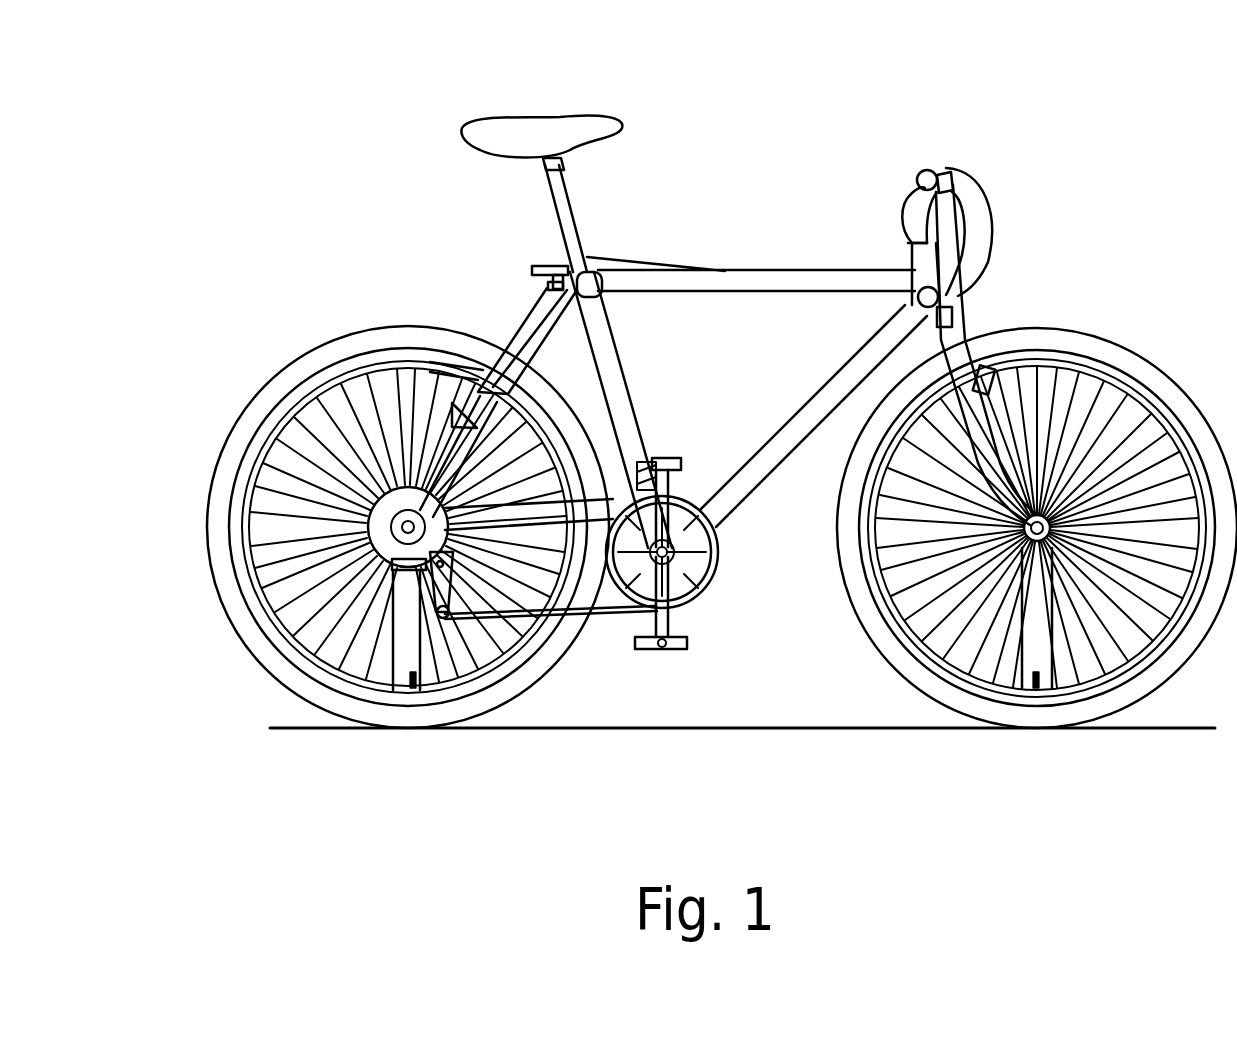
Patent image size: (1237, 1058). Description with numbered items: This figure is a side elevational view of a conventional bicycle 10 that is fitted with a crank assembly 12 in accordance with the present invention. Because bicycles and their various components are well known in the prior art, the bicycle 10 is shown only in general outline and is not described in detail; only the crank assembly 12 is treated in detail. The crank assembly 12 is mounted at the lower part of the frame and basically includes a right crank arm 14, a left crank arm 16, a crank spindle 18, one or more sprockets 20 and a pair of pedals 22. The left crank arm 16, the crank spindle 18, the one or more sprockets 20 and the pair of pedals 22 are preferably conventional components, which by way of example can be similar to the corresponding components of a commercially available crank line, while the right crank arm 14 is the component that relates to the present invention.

The bicycle 10 is at (985, 128).
The crank assembly 12 is at (742, 627).
The right crank arm 14 is at (674, 622).
The left crank arm 16 is at (665, 490).
The crank spindle 18 is at (633, 603).
The sprockets 20 is at (717, 578).
The pedals 22 is at (663, 458).